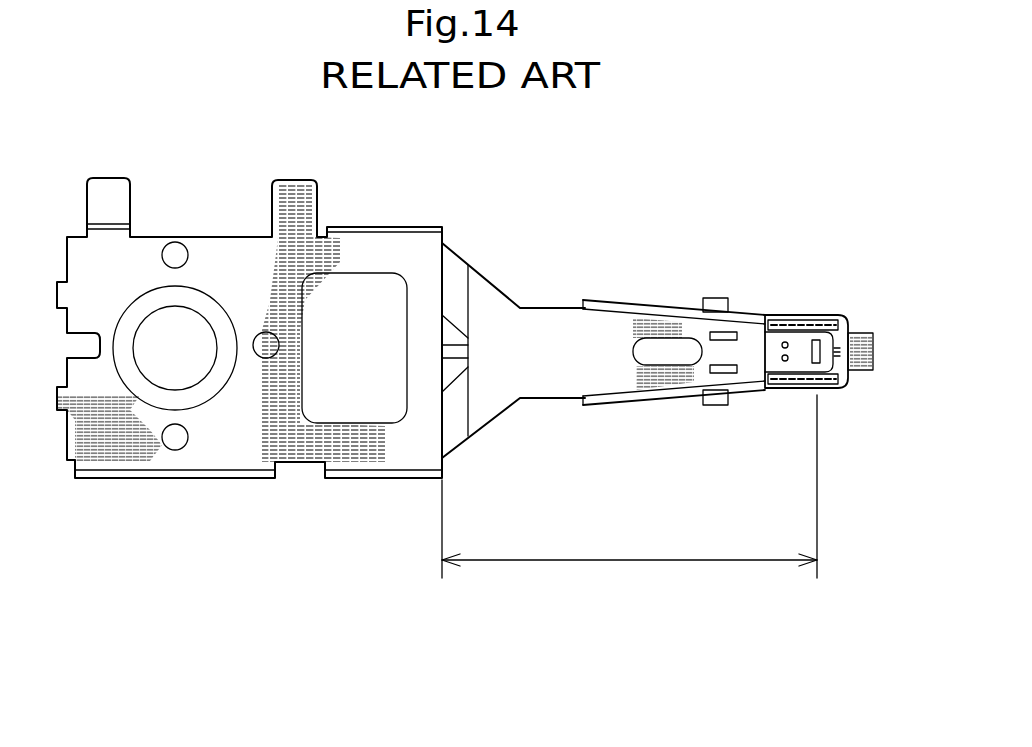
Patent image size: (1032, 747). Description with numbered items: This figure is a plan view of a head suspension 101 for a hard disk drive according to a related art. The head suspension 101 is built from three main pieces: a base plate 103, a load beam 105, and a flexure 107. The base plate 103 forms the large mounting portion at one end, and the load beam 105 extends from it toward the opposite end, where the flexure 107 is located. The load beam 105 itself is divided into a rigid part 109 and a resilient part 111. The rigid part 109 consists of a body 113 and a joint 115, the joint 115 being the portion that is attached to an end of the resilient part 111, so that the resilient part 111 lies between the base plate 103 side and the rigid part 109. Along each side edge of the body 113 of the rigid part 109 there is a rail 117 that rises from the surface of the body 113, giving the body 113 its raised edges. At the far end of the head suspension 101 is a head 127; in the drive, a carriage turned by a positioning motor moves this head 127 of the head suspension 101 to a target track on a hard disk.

The head suspension 101 is at (623, 175).
The base plate 103 is at (235, 272).
The load beam 105 is at (674, 336).
The flexure 107 is at (828, 349).
The rigid part 109 is at (752, 318).
The resilient part 111 is at (453, 273).
The body 113 is at (665, 376).
The joint 115 is at (511, 320).
The rail 117 is at (603, 388).
The head 127 is at (833, 392).